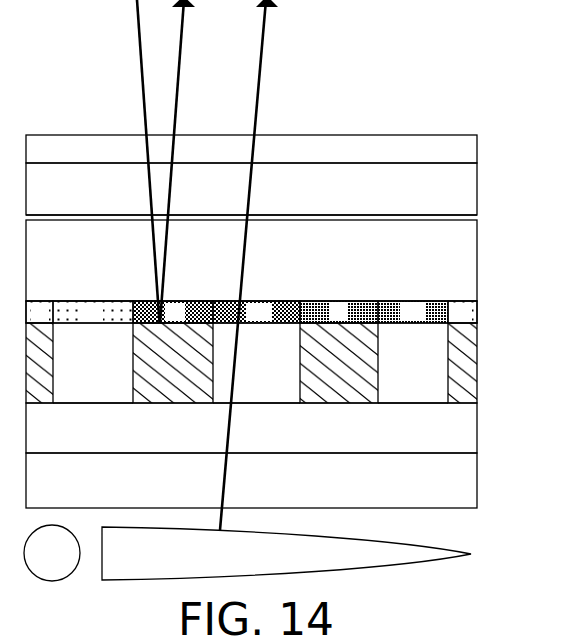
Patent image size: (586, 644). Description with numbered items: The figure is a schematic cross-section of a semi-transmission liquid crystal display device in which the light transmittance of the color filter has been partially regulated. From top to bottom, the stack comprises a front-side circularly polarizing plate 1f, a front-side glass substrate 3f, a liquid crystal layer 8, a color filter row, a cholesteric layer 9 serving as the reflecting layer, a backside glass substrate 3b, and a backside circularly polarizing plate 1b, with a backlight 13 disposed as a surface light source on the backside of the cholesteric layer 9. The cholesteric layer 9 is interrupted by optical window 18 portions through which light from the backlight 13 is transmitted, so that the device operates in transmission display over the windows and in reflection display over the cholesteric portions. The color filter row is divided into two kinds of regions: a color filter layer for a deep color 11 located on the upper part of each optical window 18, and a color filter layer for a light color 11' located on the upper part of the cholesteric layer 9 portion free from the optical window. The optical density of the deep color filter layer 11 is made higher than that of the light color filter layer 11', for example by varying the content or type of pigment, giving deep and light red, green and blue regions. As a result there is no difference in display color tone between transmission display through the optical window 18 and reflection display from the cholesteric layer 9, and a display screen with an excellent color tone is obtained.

The front-side circularly polarizing plate 1f is at (470, 150).
The front-side glass substrate 3f is at (470, 193).
The liquid crystal layer 8 is at (468, 243).
The color filter layer for a deep color 11 is at (286, 293).
The color filter layer for a light color 11' is at (502, 311).
The optical window 18 is at (428, 368).
The cholesteric layer 9 is at (468, 395).
The backside glass substrate 3b is at (470, 444).
The backside circularly polarizing plate 1b is at (470, 497).
The backlight 13 is at (471, 554).